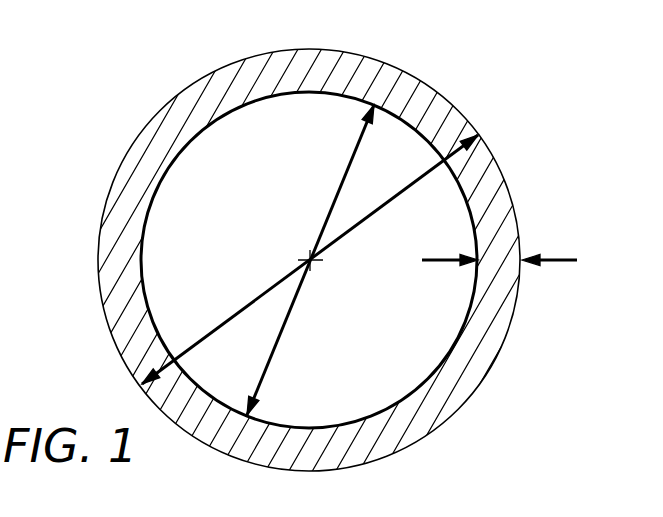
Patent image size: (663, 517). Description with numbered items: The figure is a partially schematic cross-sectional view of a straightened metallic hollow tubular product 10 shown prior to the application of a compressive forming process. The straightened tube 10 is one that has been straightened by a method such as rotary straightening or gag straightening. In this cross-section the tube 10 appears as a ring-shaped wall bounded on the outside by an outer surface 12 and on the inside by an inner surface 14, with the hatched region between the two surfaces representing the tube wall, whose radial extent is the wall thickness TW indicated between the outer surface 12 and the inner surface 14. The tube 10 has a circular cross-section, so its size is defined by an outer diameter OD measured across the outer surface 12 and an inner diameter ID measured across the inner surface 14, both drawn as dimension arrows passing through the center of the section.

The straightened metallic hollow tubular product 10 is at (331, 258).
The outer surface 12 is at (116, 178).
The inner surface 14 is at (170, 165).
The outer diameter OD is at (250, 302).
The inner diameter ID is at (282, 327).
The wall thickness TW is at (555, 260).